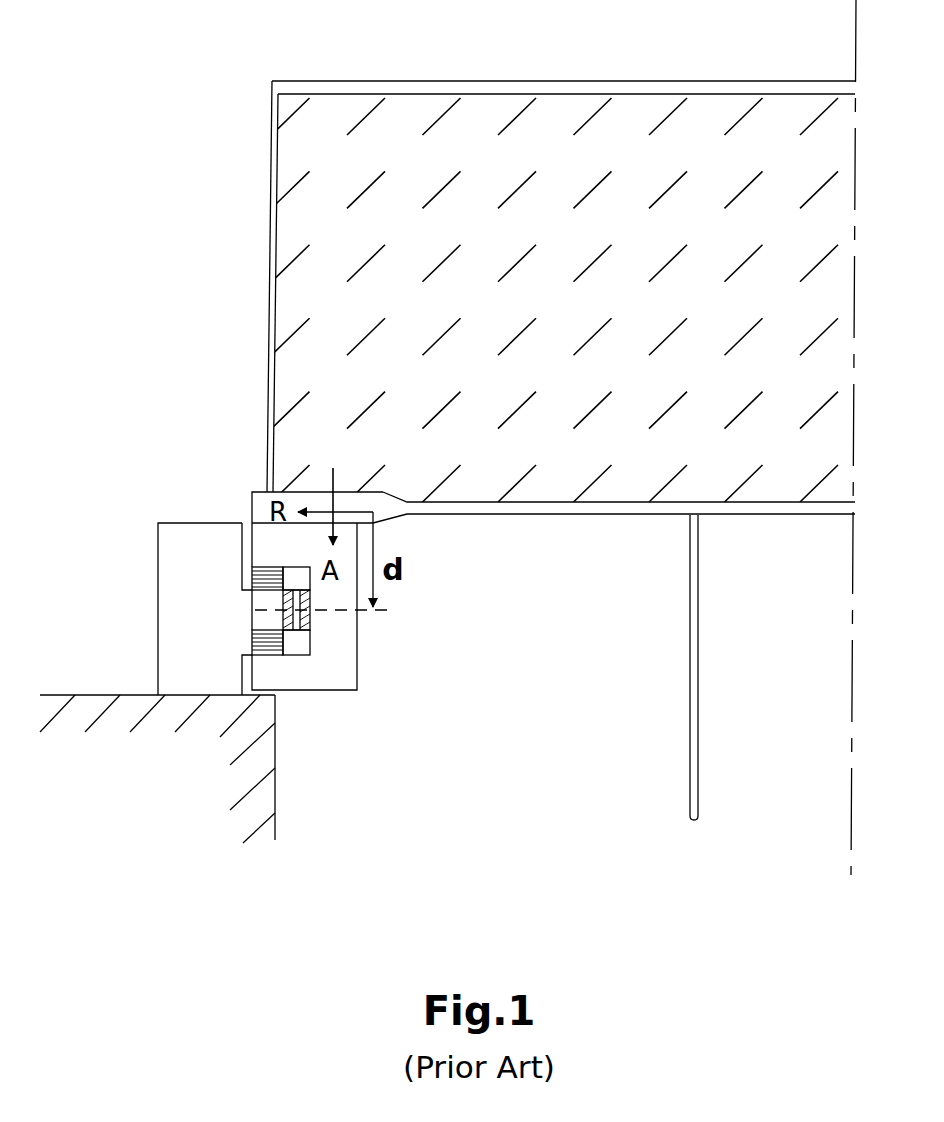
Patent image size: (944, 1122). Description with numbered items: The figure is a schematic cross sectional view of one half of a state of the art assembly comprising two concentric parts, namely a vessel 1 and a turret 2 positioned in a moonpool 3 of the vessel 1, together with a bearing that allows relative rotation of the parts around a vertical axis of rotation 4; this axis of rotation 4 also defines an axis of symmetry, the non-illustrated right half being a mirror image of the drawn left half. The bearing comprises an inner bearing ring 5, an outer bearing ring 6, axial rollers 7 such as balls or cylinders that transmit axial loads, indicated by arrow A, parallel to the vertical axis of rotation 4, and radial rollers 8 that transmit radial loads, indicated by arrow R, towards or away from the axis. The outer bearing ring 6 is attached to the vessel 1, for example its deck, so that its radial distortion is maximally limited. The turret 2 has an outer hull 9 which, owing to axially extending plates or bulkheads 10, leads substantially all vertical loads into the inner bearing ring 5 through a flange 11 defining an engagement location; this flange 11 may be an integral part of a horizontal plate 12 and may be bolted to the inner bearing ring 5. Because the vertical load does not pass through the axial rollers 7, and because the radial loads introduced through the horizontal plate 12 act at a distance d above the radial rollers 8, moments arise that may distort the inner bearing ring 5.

The vessel 1 is at (157, 754).
The turret 2 is at (384, 79).
The moonpool 3 is at (275, 805).
The vertical axis of rotation 4 is at (855, 42).
The inner bearing ring 5 is at (331, 690).
The outer bearing ring 6 is at (168, 545).
The axial rollers 7 is at (250, 580).
The radial rollers 8 is at (307, 620).
The outer hull 9 is at (272, 134).
The bulkheads 10 is at (470, 125).
The flange 11 is at (252, 507).
The horizontal plate 12 is at (599, 505).